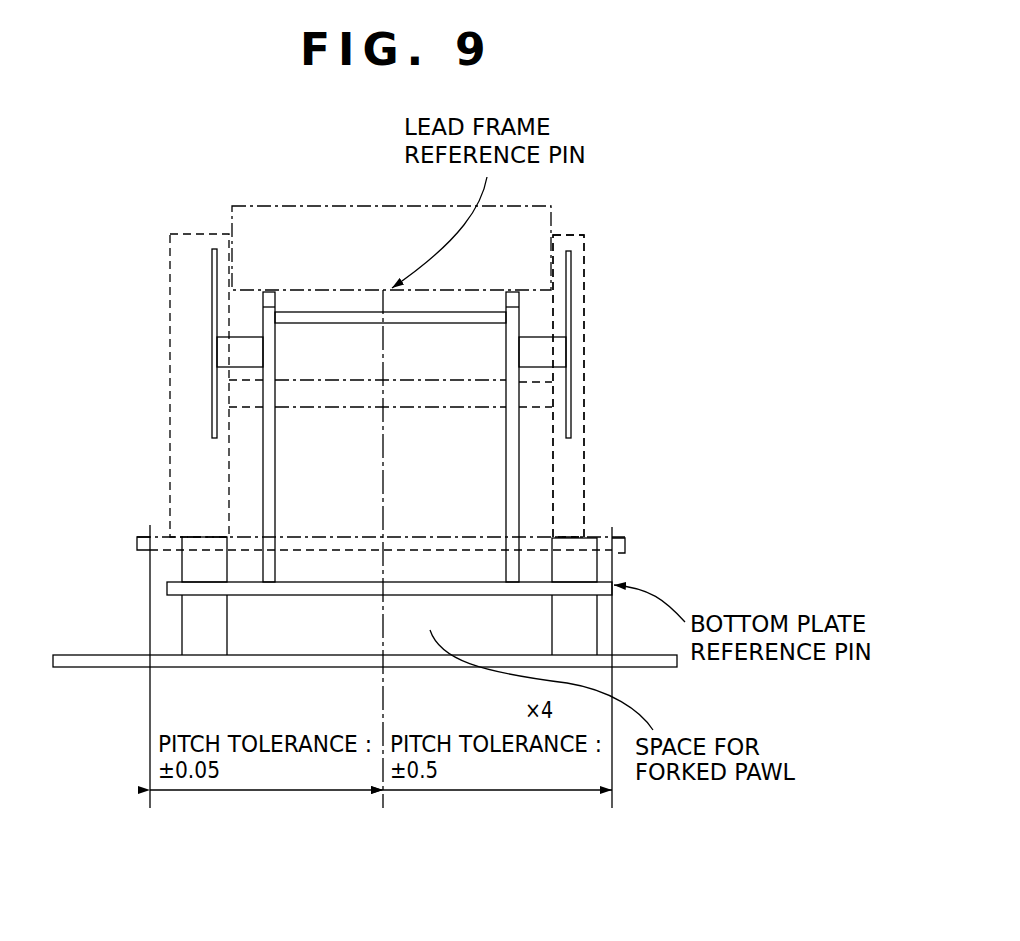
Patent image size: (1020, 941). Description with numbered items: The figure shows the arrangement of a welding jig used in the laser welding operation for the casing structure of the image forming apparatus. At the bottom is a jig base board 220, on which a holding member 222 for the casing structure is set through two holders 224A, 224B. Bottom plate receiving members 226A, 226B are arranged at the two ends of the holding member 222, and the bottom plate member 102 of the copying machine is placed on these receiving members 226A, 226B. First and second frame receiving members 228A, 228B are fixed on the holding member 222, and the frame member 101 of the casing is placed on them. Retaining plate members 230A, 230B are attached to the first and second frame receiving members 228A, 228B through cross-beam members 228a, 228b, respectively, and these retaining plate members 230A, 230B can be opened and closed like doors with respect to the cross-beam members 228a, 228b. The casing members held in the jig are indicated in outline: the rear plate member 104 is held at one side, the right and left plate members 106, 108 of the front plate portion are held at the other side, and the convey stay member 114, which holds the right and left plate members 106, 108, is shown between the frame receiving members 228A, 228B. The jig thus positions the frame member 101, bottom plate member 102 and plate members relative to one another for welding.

The frame member 101 is at (522, 228).
The bottom plate member 102 is at (635, 533).
The rear plate member 104 is at (192, 287).
The right plate member 106 is at (583, 333).
The left plate member 108 is at (568, 386).
The convey stay member 114 is at (302, 395).
The jig base board 220 is at (278, 668).
The holding member 222 is at (167, 583).
The holder 224A is at (565, 620).
The holder 224B is at (210, 618).
The bottom plate receiving member 226A is at (600, 567).
The bottom plate receiving member 226B is at (205, 552).
The first frame receiving member 228A is at (515, 470).
The second frame receiving member 228B is at (262, 463).
The cross-beam member 228a is at (548, 352).
The cross-beam member 228b is at (212, 355).
The retaining plate member 230A is at (568, 280).
The retaining plate member 230B is at (215, 382).